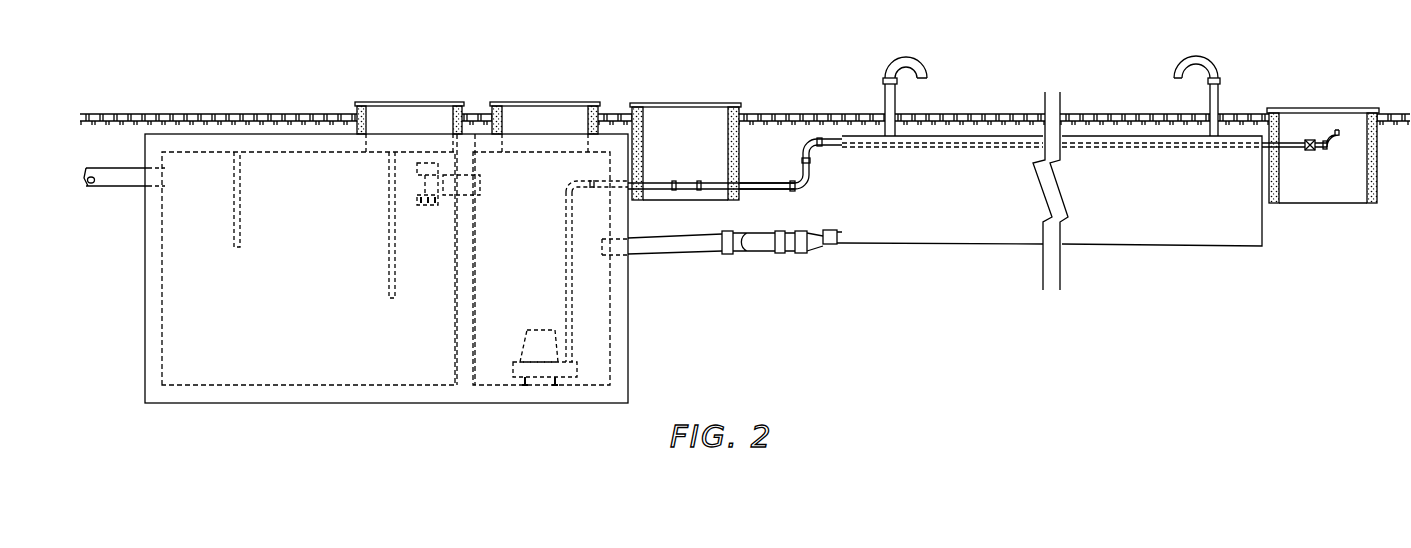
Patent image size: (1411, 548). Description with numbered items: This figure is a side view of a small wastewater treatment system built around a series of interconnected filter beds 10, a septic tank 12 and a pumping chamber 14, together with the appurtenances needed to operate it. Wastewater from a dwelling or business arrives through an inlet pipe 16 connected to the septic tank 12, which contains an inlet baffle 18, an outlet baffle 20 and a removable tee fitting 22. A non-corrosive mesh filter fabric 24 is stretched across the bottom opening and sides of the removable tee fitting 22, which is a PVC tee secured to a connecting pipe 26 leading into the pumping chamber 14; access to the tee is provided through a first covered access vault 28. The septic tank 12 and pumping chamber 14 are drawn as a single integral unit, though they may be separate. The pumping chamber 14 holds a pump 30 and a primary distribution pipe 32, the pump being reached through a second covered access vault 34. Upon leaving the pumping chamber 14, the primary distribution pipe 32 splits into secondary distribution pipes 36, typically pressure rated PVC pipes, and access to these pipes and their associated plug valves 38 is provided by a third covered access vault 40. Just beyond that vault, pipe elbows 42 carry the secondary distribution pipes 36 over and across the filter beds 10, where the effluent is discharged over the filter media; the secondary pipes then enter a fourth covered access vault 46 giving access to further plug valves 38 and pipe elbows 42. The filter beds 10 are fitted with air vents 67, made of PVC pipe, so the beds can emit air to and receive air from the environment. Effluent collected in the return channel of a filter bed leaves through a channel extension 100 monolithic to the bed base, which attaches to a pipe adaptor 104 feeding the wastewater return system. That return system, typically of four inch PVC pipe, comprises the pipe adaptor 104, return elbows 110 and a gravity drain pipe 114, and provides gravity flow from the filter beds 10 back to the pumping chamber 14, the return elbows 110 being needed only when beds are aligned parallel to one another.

The filter beds 10 is at (1113, 252).
The septic tank 12 is at (344, 365).
The pumping chamber 14 is at (497, 372).
The inlet pipe 16 is at (130, 188).
The inlet baffle 18 is at (238, 213).
The outlet baffle 20 is at (388, 252).
The removable tee fitting 22 is at (422, 187).
The mesh filter fabric 24 is at (430, 205).
The connecting pipe 26 is at (475, 192).
The first covered access vault 28 is at (462, 104).
The pump 30 is at (538, 330).
The primary distribution pipe 32 is at (566, 262).
The second covered access vault 34 is at (598, 104).
The secondary distribution pipes 36 is at (755, 192).
The plug valves 38 is at (1310, 150).
The third covered access vault 40 is at (739, 104).
The pipe elbows 42 is at (818, 143).
The fourth covered access vault 46 is at (1377, 190).
The air vents 67 is at (913, 60).
The channel extension 100 is at (838, 244).
The pipe adaptor 104 is at (822, 250).
The return elbows 110 is at (763, 253).
The gravity drain pipe 114 is at (658, 256).